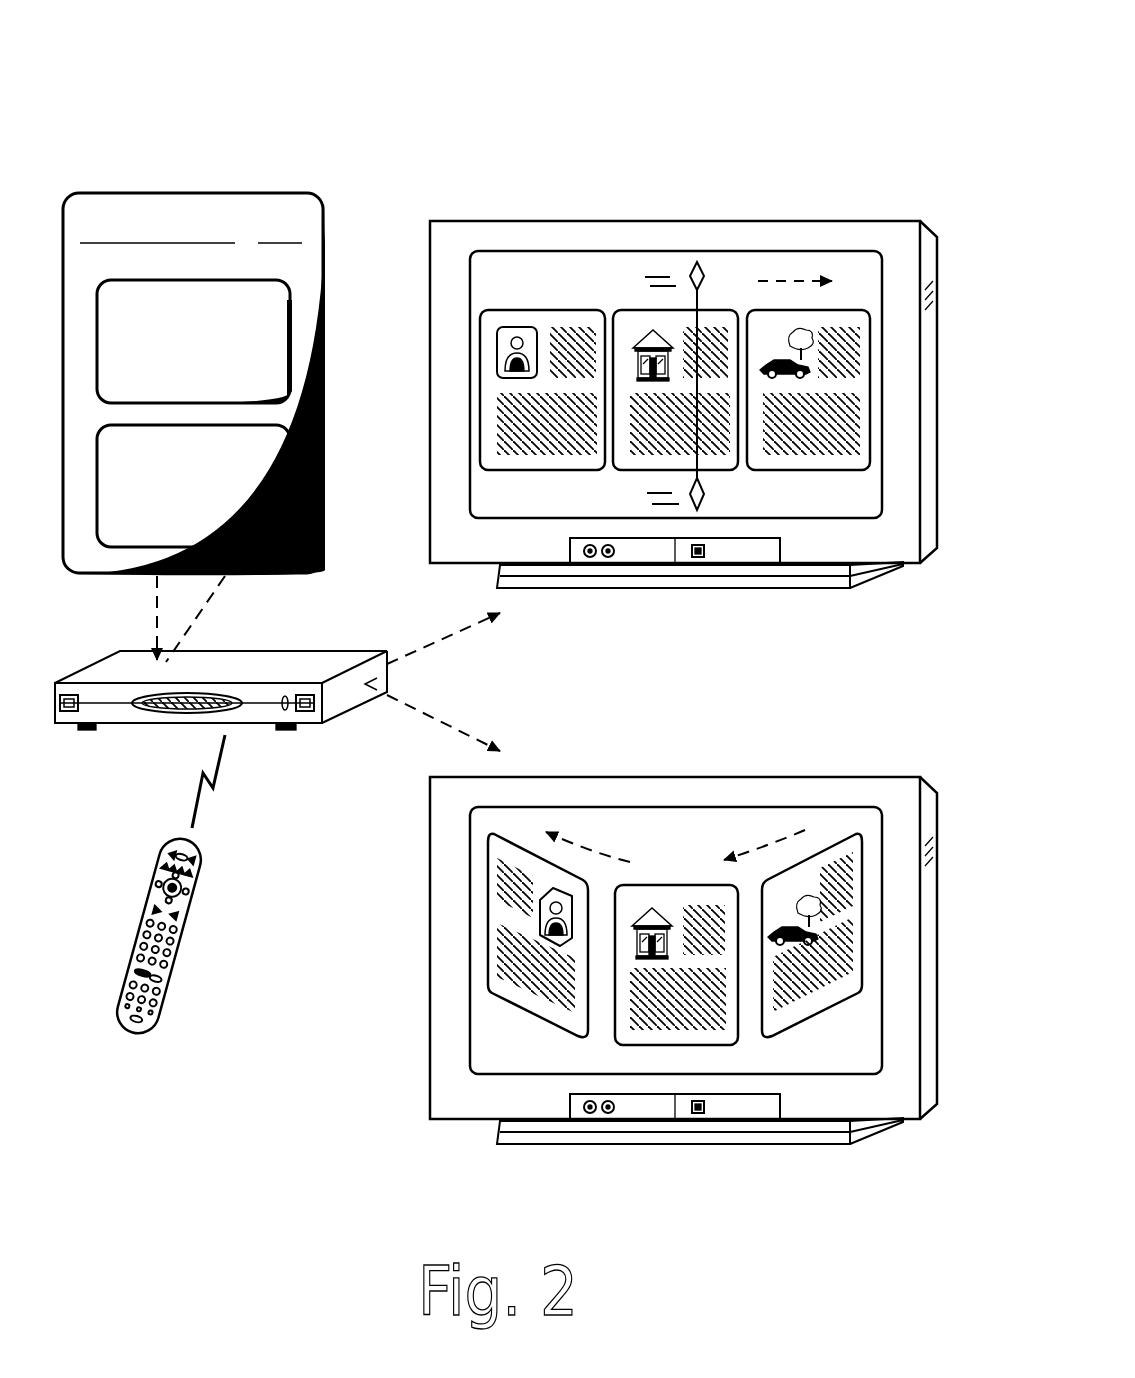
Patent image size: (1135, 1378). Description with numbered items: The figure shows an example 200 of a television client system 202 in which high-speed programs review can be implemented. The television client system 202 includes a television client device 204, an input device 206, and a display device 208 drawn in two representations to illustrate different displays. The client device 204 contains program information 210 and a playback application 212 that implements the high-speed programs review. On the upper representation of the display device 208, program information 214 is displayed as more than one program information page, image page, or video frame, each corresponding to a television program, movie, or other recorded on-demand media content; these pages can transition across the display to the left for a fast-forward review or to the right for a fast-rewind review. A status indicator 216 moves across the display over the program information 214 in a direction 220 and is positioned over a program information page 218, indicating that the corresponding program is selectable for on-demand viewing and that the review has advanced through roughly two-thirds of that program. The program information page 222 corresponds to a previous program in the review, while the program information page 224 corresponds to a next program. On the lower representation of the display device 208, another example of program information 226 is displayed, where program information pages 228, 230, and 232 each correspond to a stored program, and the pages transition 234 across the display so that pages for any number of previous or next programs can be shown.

The example 200 is at (767, 68).
The television client system 202 is at (160, 770).
The television client device 204 is at (250, 663).
The input device 206 is at (172, 983).
The display device 208 is at (659, 659).
The program information 210 is at (170, 525).
The playback application 212 is at (170, 380).
The program information 214 is at (503, 275).
The status indicator 216 is at (692, 262).
The program information page 218 is at (636, 310).
The direction 220 is at (812, 282).
The program information page 222 is at (565, 508).
The program information page 224 is at (834, 508).
The program information 226 is at (828, 830).
The program information page 228 is at (539, 1042).
The program information page 230 is at (695, 885).
The program information page 232 is at (869, 1042).
The transition 234 is at (790, 835).